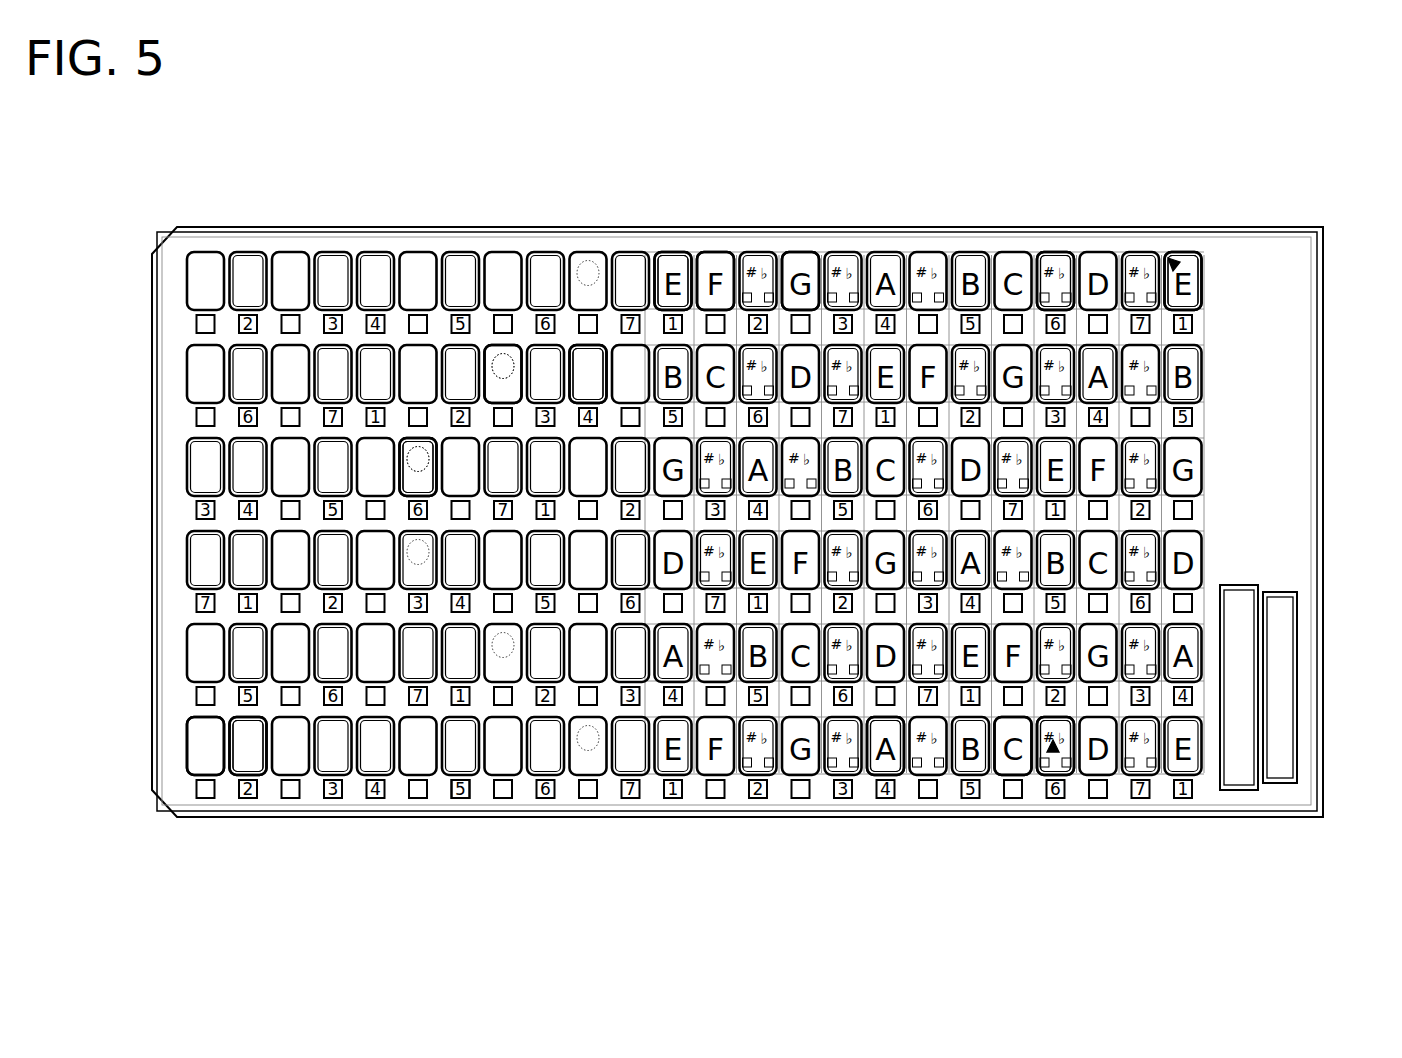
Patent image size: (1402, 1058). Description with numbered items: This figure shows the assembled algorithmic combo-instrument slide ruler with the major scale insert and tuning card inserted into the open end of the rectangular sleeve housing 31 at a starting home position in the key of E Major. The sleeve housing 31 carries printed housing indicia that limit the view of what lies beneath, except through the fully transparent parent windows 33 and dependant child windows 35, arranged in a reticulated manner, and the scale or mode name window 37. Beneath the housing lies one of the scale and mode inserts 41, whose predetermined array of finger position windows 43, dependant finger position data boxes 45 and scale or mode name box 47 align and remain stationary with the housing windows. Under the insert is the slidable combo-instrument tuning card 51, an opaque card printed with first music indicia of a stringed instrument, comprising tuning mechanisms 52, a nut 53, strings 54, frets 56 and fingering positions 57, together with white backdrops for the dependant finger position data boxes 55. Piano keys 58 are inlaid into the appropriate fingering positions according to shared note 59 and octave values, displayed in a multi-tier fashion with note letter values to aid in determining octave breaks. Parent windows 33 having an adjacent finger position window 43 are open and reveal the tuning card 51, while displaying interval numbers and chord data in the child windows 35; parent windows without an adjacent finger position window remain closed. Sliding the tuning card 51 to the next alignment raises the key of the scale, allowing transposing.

The rectangular sleeve housing 31 is at (689, 244).
The parent windows 33 is at (382, 271).
The dependant child windows 35 is at (480, 826).
The scale or mode name window 37 is at (1307, 695).
The scale and mode inserts 41 is at (382, 271).
The finger position windows 43 is at (316, 337).
The dependant finger position data boxes 45 is at (480, 826).
The scale or mode name box 47 is at (1307, 695).
The slidable combo-instrument tuning card 51 is at (736, 521).
The tuning mechanisms 52 is at (382, 271).
The nut 53 is at (689, 244).
The strings 54 is at (556, 224).
The dependant finger position data boxes 55 is at (717, 826).
The frets 56 is at (1011, 244).
The fingering positions 57 is at (1119, 524).
The piano keys 58 is at (556, 224).
The shared note 59 is at (556, 224).